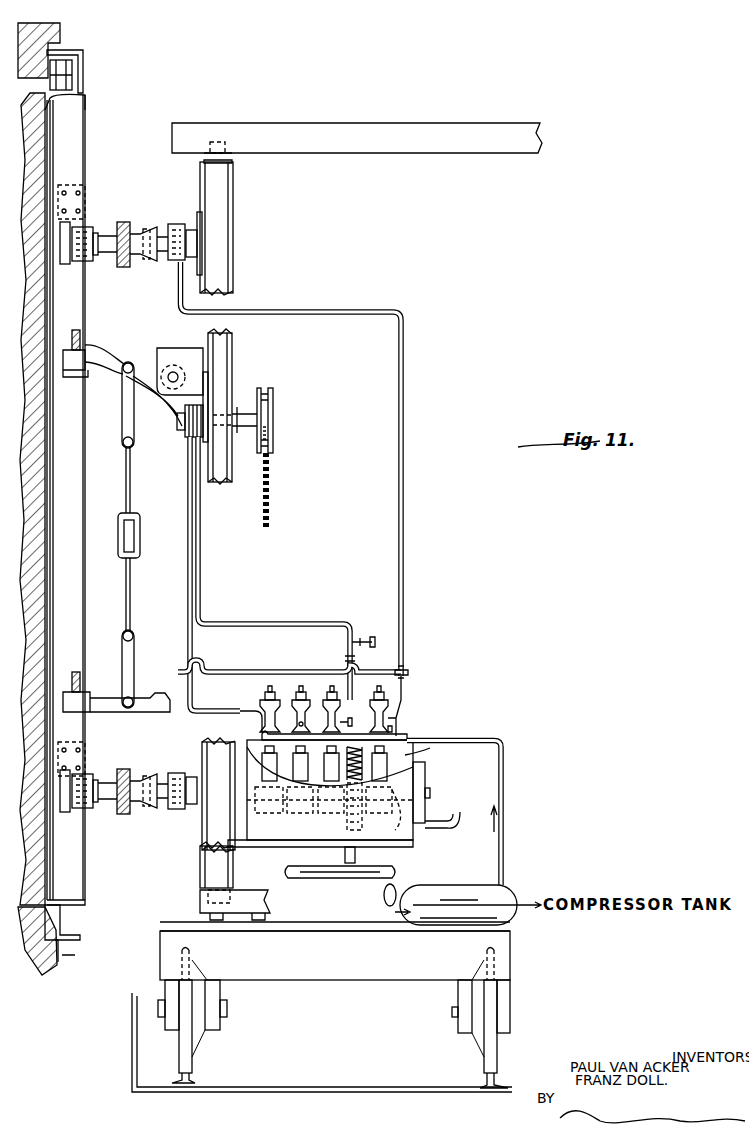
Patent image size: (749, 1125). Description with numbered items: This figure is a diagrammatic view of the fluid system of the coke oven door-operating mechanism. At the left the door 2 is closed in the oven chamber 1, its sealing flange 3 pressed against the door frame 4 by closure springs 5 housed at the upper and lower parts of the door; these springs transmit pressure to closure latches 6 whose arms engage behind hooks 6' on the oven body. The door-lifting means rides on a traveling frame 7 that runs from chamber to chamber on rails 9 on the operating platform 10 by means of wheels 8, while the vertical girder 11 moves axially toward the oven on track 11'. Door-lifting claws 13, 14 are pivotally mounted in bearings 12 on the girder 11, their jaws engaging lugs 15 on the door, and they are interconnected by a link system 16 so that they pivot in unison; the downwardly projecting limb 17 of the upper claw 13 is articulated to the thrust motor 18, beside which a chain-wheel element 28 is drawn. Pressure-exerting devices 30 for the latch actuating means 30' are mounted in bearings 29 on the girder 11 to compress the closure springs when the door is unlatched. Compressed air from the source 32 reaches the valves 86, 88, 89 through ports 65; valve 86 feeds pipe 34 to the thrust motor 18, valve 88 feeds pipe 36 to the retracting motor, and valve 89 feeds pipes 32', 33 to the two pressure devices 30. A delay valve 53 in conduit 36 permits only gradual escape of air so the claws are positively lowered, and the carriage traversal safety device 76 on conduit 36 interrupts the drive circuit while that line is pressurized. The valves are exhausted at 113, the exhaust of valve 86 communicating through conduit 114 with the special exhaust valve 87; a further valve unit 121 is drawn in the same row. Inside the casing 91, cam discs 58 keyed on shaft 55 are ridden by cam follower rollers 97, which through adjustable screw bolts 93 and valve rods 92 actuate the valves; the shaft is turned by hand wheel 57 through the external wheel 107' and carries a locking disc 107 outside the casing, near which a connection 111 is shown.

The oven chamber 1 is at (85, 112).
The door 2 is at (33, 158).
The sealing flange 3 is at (72, 66).
The door frame 4 is at (83, 52).
The closure springs 5 is at (80, 264).
The closure latches 6 is at (121, 525).
The hooks 6' is at (156, 485).
The traveling frame 7 is at (353, 980).
The wheels 8 is at (179, 1052).
The rails 9 is at (175, 1080).
The operating platform 10 is at (380, 1077).
The vertical girder 11 is at (225, 525).
The track 11' is at (299, 909).
The bearings 12 is at (172, 350).
The upper door-lifting claw 13 is at (112, 373).
The lower door-lifting claw 14 is at (115, 712).
The lugs 15 is at (80, 340).
The link system 16 is at (122, 478).
The downwardly projecting limb 17 is at (178, 422).
The thrust motor 18 is at (187, 437).
The chain sprocket 28 is at (273, 398).
The bearings 29 is at (197, 244).
The pressure-exerting devices 30 is at (167, 497).
The latch actuating means 30' is at (161, 531).
The source of compressed air 32 is at (479, 800).
The pipe 32' is at (319, 469).
The pipe 33 is at (252, 655).
The pipe 34 is at (190, 572).
The pipe 36 is at (201, 510).
The delay valve 53 is at (355, 658).
The shaft 55 is at (326, 790).
The hand wheel 57 is at (395, 890).
The cam discs 58 is at (345, 806).
The ports 65 is at (262, 702).
The carriage traversal safety device 76 is at (375, 640).
The valve 86 is at (258, 716).
The special exhaust valve 87 is at (298, 700).
The valve 88 is at (342, 708).
The valve 89 is at (396, 710).
The casing 91 is at (300, 840).
The valve rods 92 is at (425, 750).
The adjustable screw bolts 93 is at (245, 752).
The cam follower rollers 97 is at (262, 766).
The locking disc 107 is at (446, 792).
The wheel 107' is at (340, 876).
The wire 111 is at (452, 820).
The exhaust connection 113 is at (345, 716).
The conduit 114 is at (262, 736).
The valve 121 is at (320, 720).